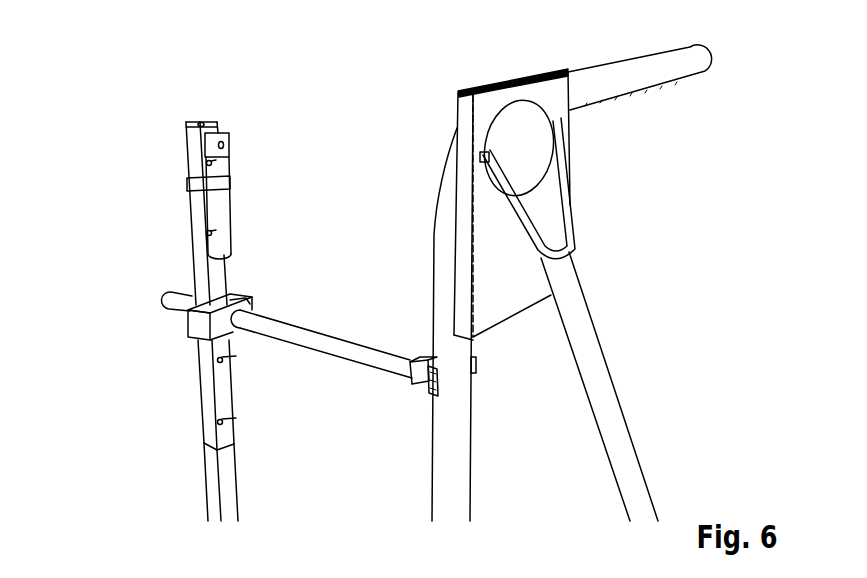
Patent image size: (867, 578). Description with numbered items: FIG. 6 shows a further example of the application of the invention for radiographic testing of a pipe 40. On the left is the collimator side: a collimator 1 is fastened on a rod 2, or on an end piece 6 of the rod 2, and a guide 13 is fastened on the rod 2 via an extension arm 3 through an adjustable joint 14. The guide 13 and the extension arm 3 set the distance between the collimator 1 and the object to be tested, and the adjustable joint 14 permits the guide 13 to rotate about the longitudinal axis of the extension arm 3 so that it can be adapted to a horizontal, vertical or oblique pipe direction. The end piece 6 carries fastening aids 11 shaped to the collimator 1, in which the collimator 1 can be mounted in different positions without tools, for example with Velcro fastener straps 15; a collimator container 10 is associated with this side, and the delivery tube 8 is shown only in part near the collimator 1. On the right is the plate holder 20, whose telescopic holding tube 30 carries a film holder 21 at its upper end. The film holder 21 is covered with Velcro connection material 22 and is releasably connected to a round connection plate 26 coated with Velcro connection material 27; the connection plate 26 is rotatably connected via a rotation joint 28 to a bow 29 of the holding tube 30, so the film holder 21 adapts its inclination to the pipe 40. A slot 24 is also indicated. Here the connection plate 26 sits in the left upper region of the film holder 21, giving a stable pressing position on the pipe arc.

The collimator container 10 is at (117, 116).
The collimator 1 is at (227, 133).
The rod 2 is at (204, 492).
The extension arm 3 is at (352, 355).
The end piece 6 is at (195, 248).
The delivery tube 8 is at (223, 224).
The fastening aid 11 is at (237, 419).
The guide 13 is at (427, 385).
The adjustable joint 14 is at (189, 338).
The Velcro fastener strap 15 is at (187, 183).
The plate holder 20 is at (687, 202).
The film holder 21 is at (563, 127).
The Velcro connection material 22 is at (497, 312).
The slot 24 is at (497, 90).
The connection plate 26 is at (533, 125).
The Velcro connection material 27 is at (496, 110).
The rotation joint 28 is at (481, 157).
The bow 29 is at (574, 228).
The holding tube 30 is at (622, 413).
The pipe 40 is at (465, 503).